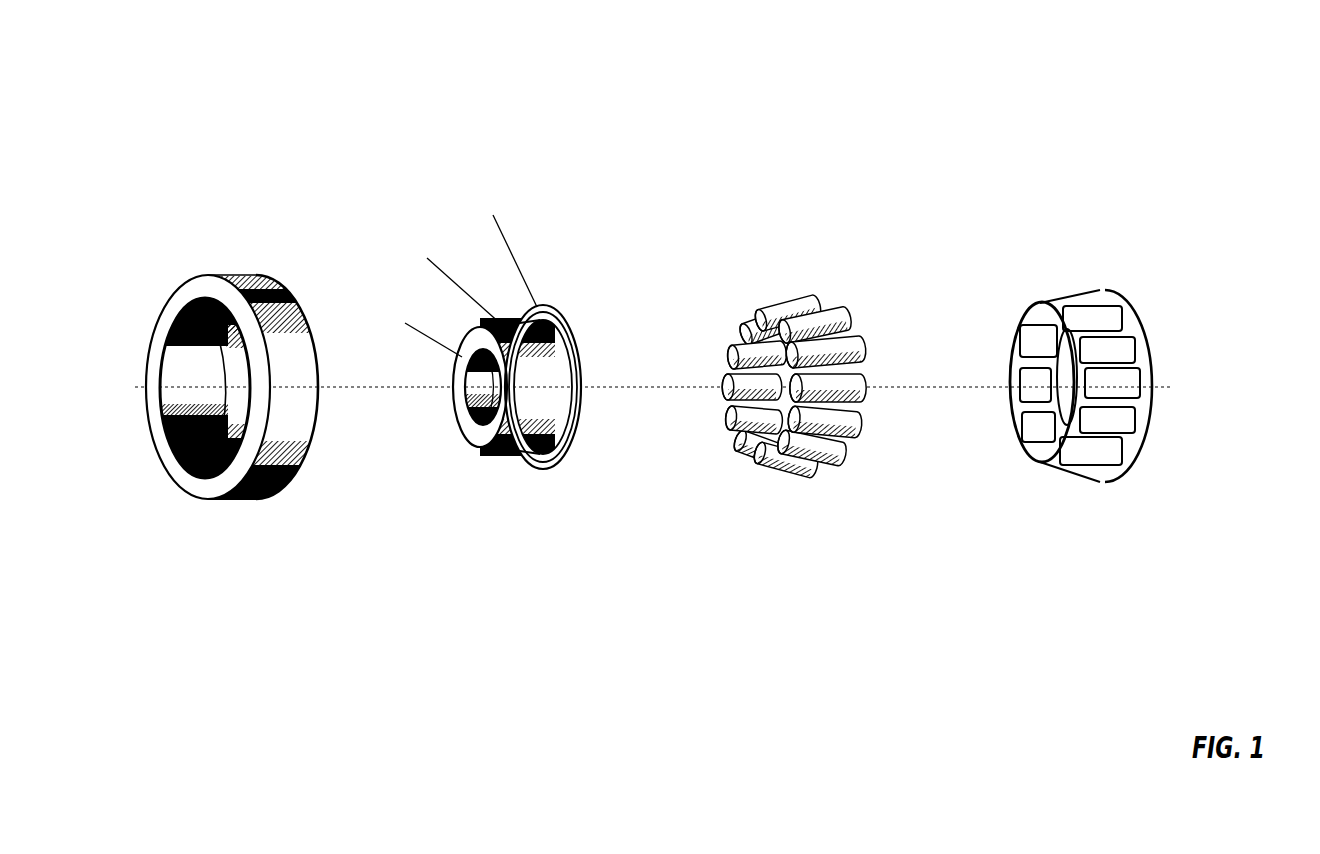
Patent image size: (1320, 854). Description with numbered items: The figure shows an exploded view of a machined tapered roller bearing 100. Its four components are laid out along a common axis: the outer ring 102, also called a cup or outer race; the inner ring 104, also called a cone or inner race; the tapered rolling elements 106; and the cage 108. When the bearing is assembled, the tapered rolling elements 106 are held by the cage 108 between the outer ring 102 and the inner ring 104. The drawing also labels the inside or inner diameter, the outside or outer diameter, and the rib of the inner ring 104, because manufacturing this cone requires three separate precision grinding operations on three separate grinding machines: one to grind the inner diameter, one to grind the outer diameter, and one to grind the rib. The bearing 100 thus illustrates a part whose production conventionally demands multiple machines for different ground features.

The tapered roller bearing 100 is at (857, 210).
The outer ring 102 is at (234, 439).
The inner ring 104 is at (473, 390).
The tapered rolling elements 106 is at (797, 464).
The cage 108 is at (1081, 432).